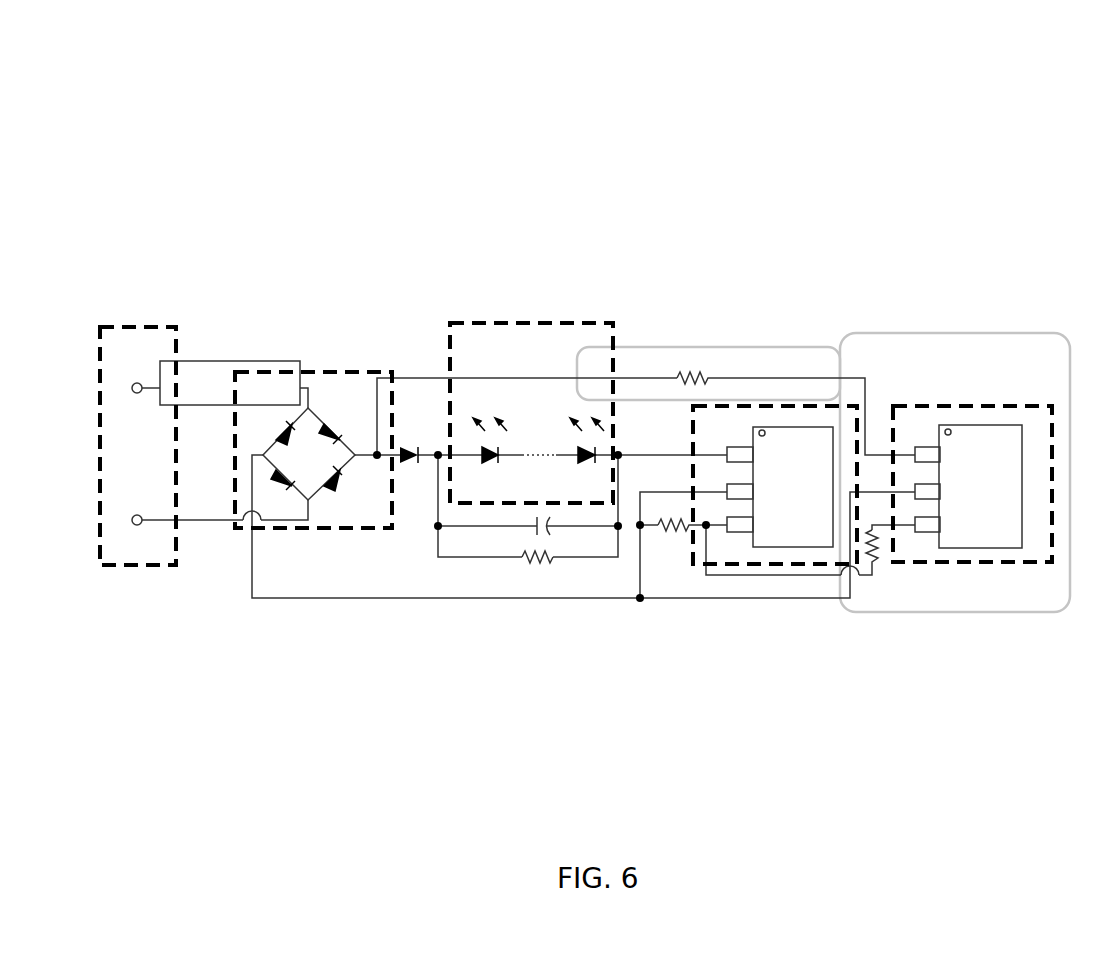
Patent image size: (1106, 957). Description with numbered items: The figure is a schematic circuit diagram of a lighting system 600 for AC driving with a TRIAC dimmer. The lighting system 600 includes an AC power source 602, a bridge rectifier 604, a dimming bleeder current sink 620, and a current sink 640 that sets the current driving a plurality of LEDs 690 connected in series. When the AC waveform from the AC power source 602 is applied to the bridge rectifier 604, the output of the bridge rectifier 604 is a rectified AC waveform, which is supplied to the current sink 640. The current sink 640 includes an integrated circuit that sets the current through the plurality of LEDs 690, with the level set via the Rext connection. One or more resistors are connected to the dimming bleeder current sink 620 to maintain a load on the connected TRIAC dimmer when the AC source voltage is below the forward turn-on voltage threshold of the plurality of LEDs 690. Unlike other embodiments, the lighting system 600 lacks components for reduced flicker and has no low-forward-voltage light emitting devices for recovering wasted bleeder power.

The lighting system 600 is at (327, 96).
The AC power source 602 is at (132, 327).
The bridge rectifier 604 is at (370, 372).
The plurality of LEDs 690 is at (527, 323).
The current sink 640 is at (782, 406).
The dimming bleeder current sink 620 is at (977, 406).